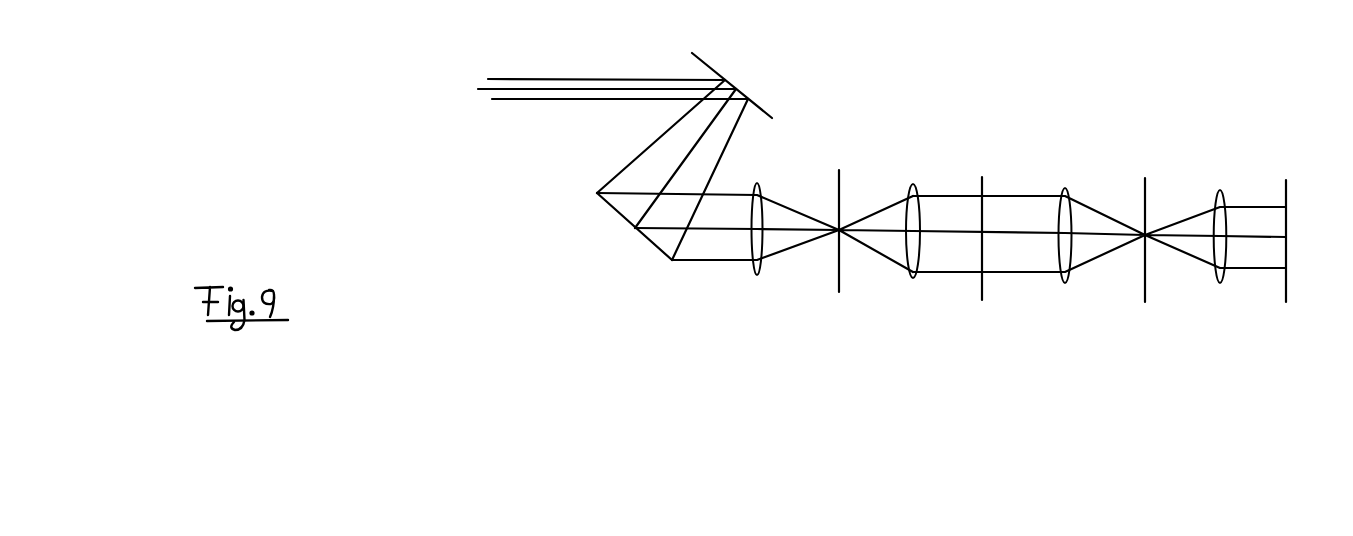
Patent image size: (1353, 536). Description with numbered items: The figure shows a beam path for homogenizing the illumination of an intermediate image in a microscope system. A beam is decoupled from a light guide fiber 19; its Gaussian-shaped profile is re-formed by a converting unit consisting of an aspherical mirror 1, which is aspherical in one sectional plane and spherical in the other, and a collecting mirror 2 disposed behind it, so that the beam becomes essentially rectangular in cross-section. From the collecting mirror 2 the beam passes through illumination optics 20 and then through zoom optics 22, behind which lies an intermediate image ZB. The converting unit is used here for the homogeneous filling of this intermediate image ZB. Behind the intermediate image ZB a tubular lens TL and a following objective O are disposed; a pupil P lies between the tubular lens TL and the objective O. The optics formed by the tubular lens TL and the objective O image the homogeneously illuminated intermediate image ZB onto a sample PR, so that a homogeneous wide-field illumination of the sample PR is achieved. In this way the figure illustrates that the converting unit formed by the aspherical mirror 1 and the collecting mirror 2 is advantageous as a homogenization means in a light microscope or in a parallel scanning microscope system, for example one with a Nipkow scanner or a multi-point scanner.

The light guide fiber 19 is at (582, 91).
The aspherical mirror 1 is at (726, 82).
The collecting mirror 2 is at (634, 228).
The illumination optics 20 is at (753, 268).
The pupil P is at (840, 188).
The zoom optics 22 is at (913, 279).
The intermediate image ZB is at (983, 187).
The tubular lens TL is at (1073, 278).
The objective O is at (1210, 280).
The sample PR is at (1290, 192).